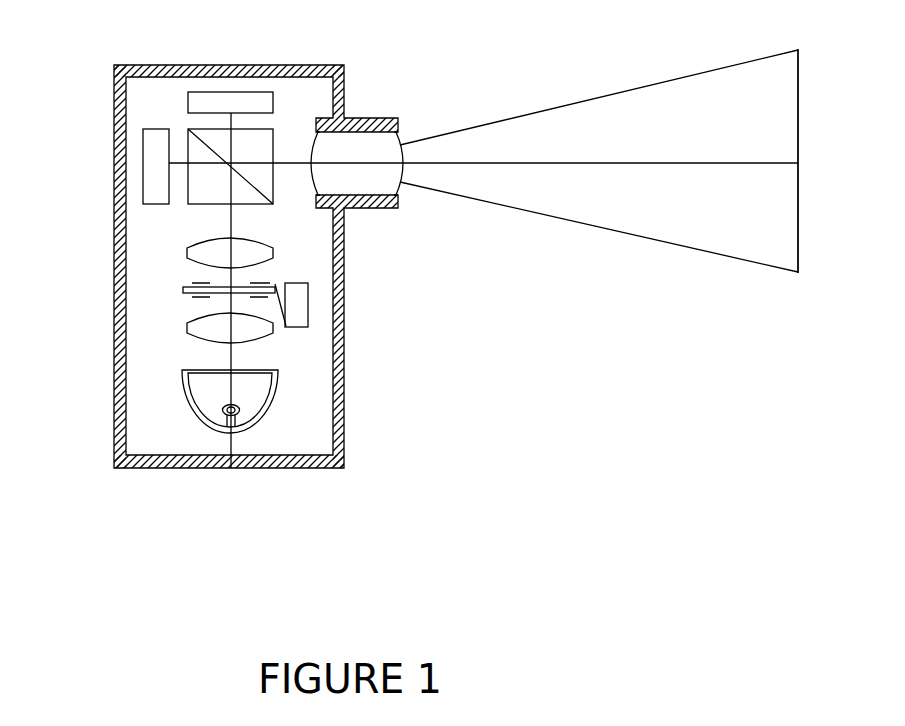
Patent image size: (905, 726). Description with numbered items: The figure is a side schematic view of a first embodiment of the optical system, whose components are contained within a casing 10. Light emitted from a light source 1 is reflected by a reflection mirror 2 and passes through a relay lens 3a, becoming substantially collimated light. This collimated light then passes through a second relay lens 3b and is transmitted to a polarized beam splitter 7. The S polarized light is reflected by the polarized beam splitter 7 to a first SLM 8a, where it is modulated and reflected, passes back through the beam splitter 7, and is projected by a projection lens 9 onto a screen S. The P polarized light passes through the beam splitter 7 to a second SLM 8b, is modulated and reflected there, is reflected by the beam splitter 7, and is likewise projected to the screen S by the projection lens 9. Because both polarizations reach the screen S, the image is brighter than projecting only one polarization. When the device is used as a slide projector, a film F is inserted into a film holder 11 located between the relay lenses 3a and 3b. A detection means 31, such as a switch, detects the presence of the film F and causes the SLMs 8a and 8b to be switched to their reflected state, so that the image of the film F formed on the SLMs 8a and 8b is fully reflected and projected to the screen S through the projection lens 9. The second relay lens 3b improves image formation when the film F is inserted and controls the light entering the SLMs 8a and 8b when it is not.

The light source 1 is at (222, 409).
The reflection mirror 2 is at (190, 402).
The relay lens 3a is at (208, 328).
The second relay lens 3b is at (213, 253).
The film F is at (187, 294).
The film holder 11 is at (193, 284).
The polarized beam splitter 7 is at (214, 136).
The first SLM 8a is at (149, 145).
The second SLM 8b is at (205, 97).
The projection lens 9 is at (362, 185).
The casing 10 is at (230, 468).
The detection means 31 is at (300, 318).
The screen S is at (797, 233).